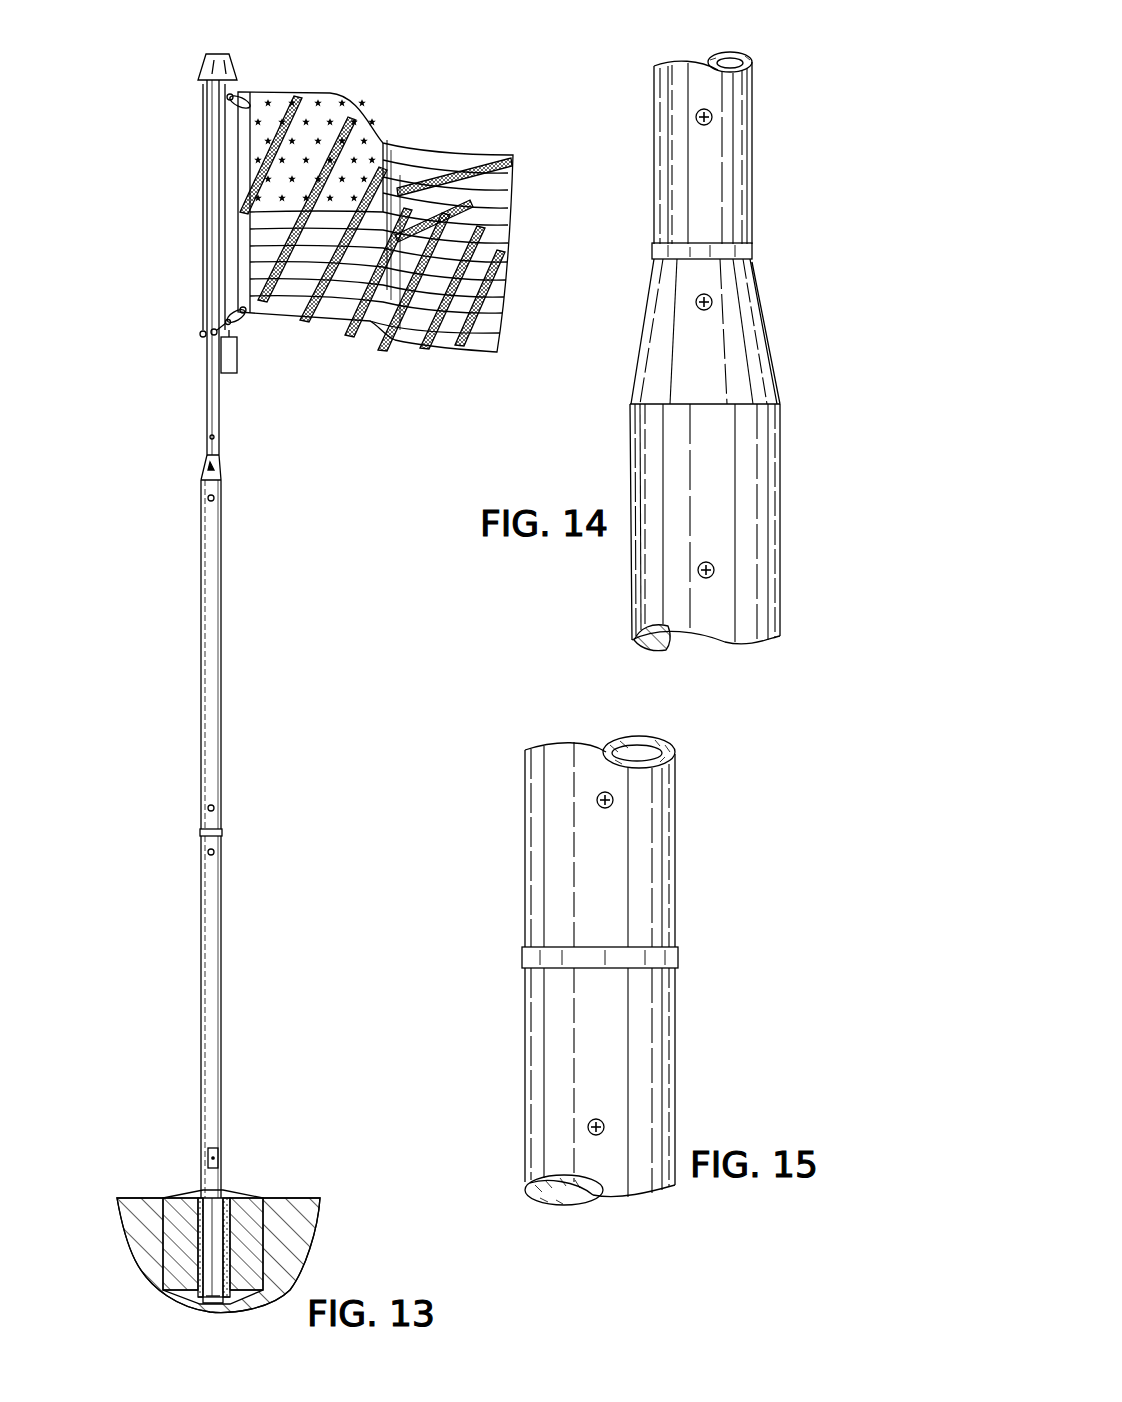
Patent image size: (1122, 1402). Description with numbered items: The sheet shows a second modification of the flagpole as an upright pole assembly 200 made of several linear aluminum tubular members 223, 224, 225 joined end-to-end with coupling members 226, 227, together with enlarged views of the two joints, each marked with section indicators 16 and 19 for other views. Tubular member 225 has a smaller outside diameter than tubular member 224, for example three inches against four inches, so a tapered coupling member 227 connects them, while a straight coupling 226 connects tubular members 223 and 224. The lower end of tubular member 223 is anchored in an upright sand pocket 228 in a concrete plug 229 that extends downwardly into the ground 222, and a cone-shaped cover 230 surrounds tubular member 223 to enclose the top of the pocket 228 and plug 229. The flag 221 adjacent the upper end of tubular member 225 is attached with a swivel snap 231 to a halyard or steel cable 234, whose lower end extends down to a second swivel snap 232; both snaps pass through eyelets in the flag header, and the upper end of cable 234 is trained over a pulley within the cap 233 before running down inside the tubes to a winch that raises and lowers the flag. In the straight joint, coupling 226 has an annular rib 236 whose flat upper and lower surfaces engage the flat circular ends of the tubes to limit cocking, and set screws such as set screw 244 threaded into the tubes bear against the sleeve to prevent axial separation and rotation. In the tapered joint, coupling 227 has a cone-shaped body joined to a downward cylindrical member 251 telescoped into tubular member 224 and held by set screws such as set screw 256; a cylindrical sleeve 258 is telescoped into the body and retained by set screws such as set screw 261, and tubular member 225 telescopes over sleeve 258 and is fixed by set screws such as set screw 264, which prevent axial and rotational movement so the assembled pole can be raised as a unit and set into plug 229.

In FIG. 13, the upright pole assembly 200 is at (182, 589).
In FIG. 13, the flag 221 is at (461, 152).
In FIG. 13, the ground 222 is at (290, 1200).
In FIG. 13, the tubular member 223 is at (216, 1013).
In FIG. 15, the tubular member 223 is at (662, 1080).
In FIG. 13, the tubular member 224 is at (210, 632).
In FIG. 14, the tubular member 224 is at (765, 535).
In FIG. 15, the tubular member 224 is at (660, 855).
In FIG. 13, the tubular member 225 is at (210, 400).
In FIG. 14, the tubular member 225 is at (745, 200).
In FIG. 13, the coupling 226 is at (222, 833).
In FIG. 15, the coupling 226 is at (678, 958).
In FIG. 13, the tapered coupling member 227 is at (219, 466).
In FIG. 14, the tapered coupling member 227 is at (770, 333).
In FIG. 13, the sand pocket 228 is at (245, 1238).
In FIG. 13, the concrete plug 229 is at (196, 1200).
In FIG. 13, the cone-shaped cover 230 is at (226, 1192).
In FIG. 13, the swivel snap 231 is at (229, 103).
In FIG. 13, the swivel snap 232 is at (226, 312).
In FIG. 13, the cap 233 is at (240, 64).
In FIG. 13, the halyard or steel cable 234 is at (232, 205).
In FIG. 13, the annular rib 236 is at (229, 351).
In FIG. 15, the annular rib 236 is at (530, 958).
In FIG. 13, the set screw 244 is at (208, 856).
In FIG. 15, the set screw 244 is at (588, 1132).
In FIG. 13, the cylindrical member 251 is at (205, 804).
In FIG. 14, the cylindrical member 251 is at (657, 652).
In FIG. 15, the cylindrical member 251 is at (598, 806).
In FIG. 14, the set screw 256 is at (698, 574).
In FIG. 14, the cylindrical sleeve 258 is at (754, 64).
In FIG. 14, the set screw 261 is at (698, 306).
In FIG. 14, the set screw 264 is at (698, 124).
In FIG. 14, the section line 19 is at (698, 32).
In FIG. 15, the section line 16 is at (603, 697).